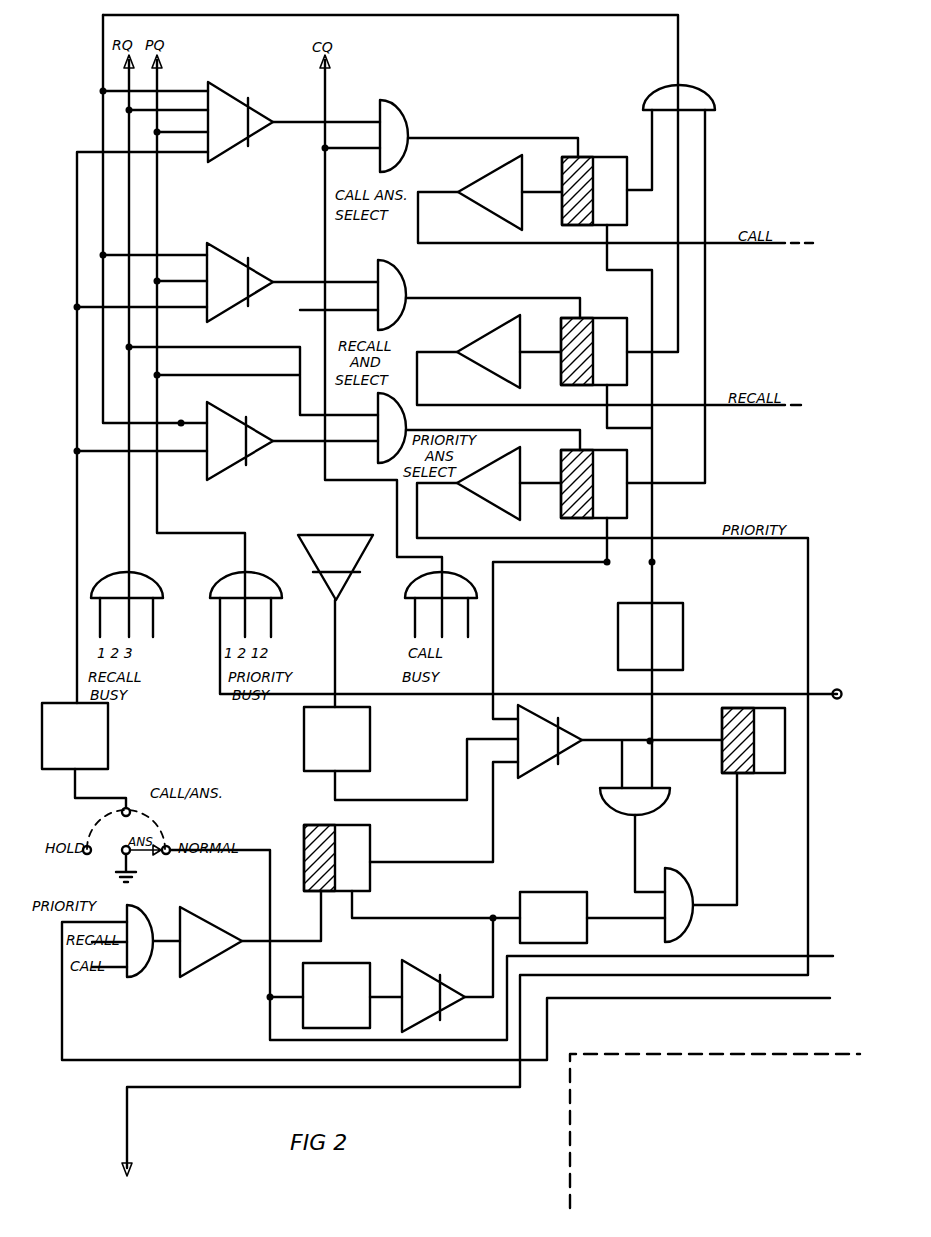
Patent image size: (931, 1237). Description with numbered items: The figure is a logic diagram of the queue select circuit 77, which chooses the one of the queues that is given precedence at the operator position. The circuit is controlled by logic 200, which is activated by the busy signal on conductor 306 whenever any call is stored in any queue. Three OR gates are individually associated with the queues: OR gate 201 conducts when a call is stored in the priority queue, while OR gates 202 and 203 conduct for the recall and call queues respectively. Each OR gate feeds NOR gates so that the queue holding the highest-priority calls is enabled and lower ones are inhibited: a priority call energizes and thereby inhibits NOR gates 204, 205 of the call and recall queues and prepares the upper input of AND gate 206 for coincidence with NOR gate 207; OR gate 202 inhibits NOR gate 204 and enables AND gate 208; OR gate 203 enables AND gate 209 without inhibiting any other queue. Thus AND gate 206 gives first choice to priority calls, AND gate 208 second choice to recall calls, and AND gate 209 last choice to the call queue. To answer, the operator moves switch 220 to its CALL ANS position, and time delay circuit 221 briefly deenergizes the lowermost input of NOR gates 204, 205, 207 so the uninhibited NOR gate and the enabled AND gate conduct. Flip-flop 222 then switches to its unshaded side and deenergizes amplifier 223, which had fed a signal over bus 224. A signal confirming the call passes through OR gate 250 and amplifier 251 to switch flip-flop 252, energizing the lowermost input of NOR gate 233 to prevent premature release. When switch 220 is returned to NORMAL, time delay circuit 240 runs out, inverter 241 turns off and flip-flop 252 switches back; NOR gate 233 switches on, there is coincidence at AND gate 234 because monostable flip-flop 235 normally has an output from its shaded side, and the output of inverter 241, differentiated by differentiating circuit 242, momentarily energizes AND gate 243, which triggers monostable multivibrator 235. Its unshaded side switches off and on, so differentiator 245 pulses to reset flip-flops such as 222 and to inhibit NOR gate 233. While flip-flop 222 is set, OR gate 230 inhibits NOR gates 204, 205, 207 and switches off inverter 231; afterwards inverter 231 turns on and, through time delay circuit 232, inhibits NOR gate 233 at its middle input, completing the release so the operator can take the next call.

The logic 200 is at (123, 522).
The OR gate 201 is at (292, 584).
The OR gate 202 is at (176, 584).
The OR gate 203 is at (480, 588).
The NOR gate 204 is at (214, 83).
The NOR gate 205 is at (240, 252).
The AND gate 206 is at (400, 422).
The NOR gate 207 is at (213, 408).
The AND gate 208 is at (416, 288).
The AND gate 209 is at (416, 122).
The switch 220 is at (150, 824).
The time delay circuit 221 is at (108, 754).
The flip-flop 222 is at (640, 456).
The amplifier 223 is at (484, 508).
The bus 224 is at (488, 533).
The OR gate 230 is at (722, 114).
The inverter 231 is at (364, 566).
The time delay circuit 232 is at (370, 760).
The NOR gate 233 is at (533, 712).
The AND gate 234 is at (672, 800).
The monostable multivibrator 235 is at (710, 714).
The time delay circuit 240 is at (318, 964).
The inverter 241 is at (403, 964).
The differentiator 242 is at (582, 894).
The AND gate 243 is at (700, 900).
The differentiator 245 is at (700, 636).
The OR gate 250 is at (136, 980).
The amplifier 251 is at (244, 920).
The flip-flop 252 is at (372, 858).
The conductor 306 is at (842, 700).
The queue select circuit 77 is at (662, 1170).